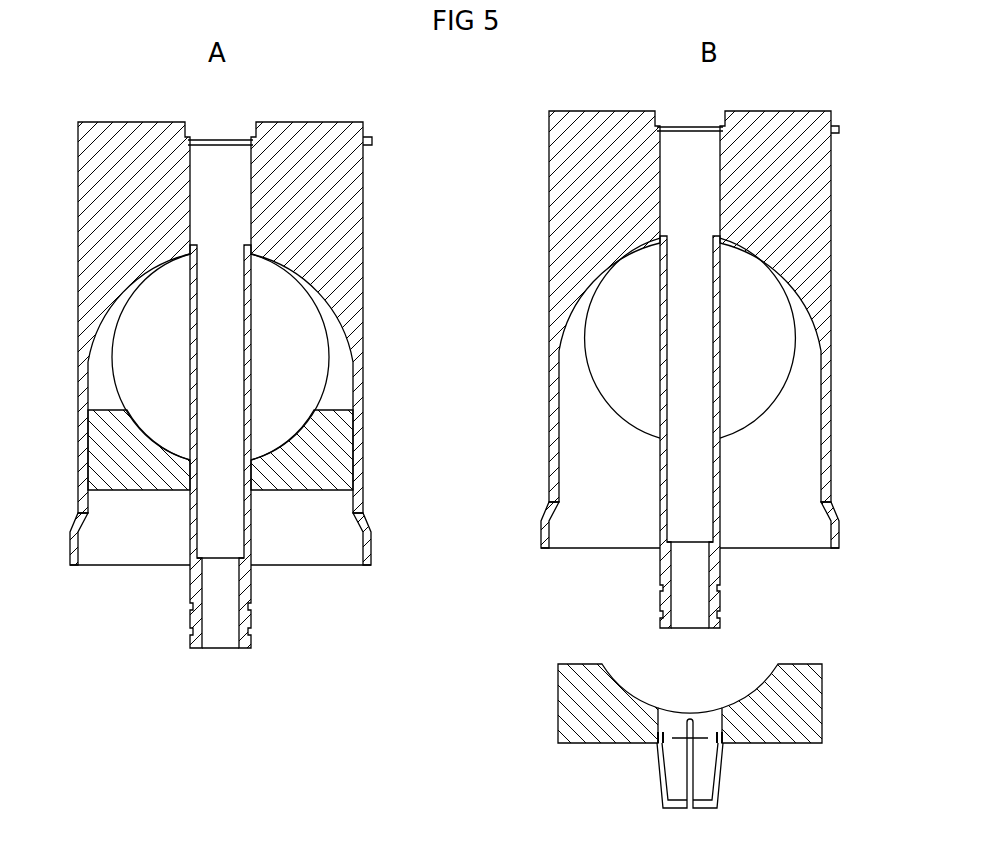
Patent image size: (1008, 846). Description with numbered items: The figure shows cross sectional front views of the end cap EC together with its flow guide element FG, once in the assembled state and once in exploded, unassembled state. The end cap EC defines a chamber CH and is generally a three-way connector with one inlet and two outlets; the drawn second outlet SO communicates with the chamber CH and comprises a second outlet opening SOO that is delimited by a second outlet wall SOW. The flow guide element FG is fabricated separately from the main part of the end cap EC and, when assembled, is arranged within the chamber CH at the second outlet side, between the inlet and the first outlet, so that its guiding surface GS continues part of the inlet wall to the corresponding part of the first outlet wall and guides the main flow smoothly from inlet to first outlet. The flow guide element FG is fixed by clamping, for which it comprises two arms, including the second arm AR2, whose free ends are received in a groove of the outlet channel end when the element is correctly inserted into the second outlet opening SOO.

In FIG. 5A, the end cap EC is at (327, 150).
In FIG. 5B, the end cap EC is at (802, 202).
In FIG. 5A, the flow guide element FG is at (318, 478).
In FIG. 5B, the flow guide element FG is at (797, 719).
In FIG. 5A, the second outlet wall SOW is at (72, 555).
In FIG. 5B, the second outlet wall SOW is at (837, 536).
In FIG. 5A, the second outlet SO is at (113, 572).
In FIG. 5B, the second outlet SO is at (813, 563).
In FIG. 5A, the second outlet opening SOO is at (168, 567).
In FIG. 5B, the second outlet opening SOO is at (612, 553).
In FIG. 5B, the chamber CH is at (748, 485).
In FIG. 5B, the guiding surface GS is at (632, 693).
In FIG. 5B, the second arm AR2 is at (722, 768).